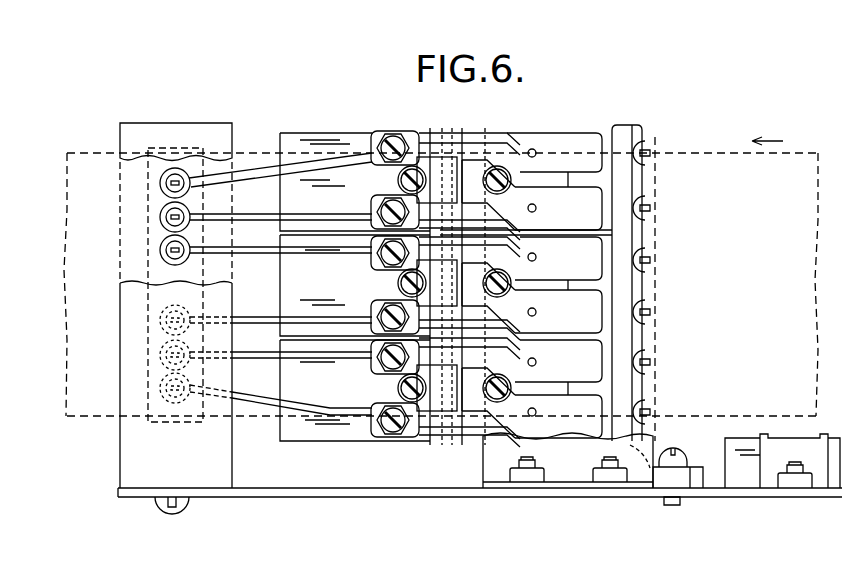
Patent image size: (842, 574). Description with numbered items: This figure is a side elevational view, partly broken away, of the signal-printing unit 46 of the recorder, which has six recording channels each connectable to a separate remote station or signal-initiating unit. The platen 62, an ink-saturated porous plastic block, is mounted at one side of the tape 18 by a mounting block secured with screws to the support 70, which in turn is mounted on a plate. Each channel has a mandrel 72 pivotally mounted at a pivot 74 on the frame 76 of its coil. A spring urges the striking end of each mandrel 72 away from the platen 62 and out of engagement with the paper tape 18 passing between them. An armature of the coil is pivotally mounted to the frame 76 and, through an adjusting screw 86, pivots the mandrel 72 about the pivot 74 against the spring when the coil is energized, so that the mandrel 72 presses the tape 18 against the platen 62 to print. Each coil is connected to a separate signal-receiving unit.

The tape 18 is at (703, 152).
The signal-printing unit 46 is at (573, 121).
The platen 62 is at (173, 147).
The support 70 is at (118, 466).
The mandrel 72 is at (262, 160).
The pivot 74 is at (447, 437).
The frame 76 is at (332, 134).
The adjusting screw 86 is at (393, 432).